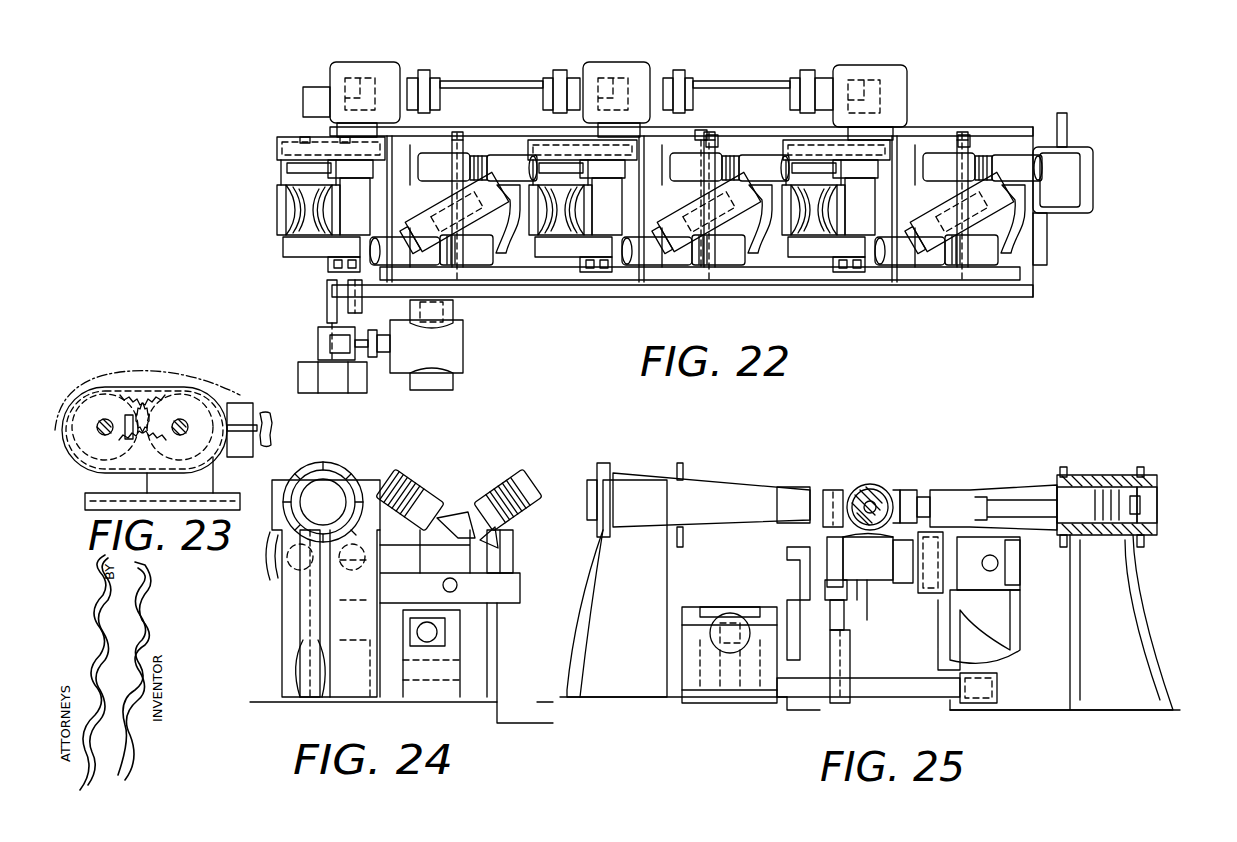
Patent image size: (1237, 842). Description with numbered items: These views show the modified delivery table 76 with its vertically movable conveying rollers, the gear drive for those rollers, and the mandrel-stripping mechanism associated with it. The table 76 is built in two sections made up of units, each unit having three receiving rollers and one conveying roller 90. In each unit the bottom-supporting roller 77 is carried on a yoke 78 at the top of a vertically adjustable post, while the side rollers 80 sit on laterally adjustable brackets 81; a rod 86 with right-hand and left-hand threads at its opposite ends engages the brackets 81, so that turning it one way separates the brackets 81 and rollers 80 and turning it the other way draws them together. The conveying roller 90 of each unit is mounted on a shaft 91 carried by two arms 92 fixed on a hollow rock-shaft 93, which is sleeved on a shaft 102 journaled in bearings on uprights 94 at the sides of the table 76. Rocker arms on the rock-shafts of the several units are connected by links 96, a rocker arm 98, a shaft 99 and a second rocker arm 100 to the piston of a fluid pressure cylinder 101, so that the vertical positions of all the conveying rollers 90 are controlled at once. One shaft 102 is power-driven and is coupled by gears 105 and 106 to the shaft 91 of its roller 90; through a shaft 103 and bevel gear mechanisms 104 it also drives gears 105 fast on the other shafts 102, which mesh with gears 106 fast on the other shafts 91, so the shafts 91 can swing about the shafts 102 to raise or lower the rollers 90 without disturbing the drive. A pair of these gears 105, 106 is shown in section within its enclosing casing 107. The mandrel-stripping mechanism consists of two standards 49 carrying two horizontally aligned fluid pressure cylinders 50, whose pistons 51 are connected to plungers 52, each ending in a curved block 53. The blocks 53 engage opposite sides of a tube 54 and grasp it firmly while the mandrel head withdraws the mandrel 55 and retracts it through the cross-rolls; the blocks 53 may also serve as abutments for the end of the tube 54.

In FIG. 25, the standard 49 is at (1078, 475).
In FIG. 25, the fluid pressure cylinder 50 is at (1100, 487).
In FIG. 25, the piston 51 is at (1150, 487).
In FIG. 25, the plunger 52 is at (1000, 503).
In FIG. 25, the curved block 53 is at (835, 490).
In FIG. 25, the tube 54 is at (866, 487).
In FIG. 25, the mandrel 55 is at (897, 488).
In FIG. 22, the delivery table 76 is at (1060, 275).
In FIG. 22, the bottom-supporting roller 77 is at (446, 212).
In FIG. 22, the yoke 78 is at (510, 240).
In FIG. 24, the yoke 78 is at (510, 560).
In FIG. 22, the side roller 80 is at (515, 160).
In FIG. 24, the side roller 80 is at (400, 490).
In FIG. 24, the laterally-adjustable bracket 81 is at (455, 515).
In FIG. 22, the rod 86 is at (710, 135).
In FIG. 24, the rod 86 is at (505, 590).
In FIG. 22, the conveying roller 90 is at (292, 208).
In FIG. 25, the conveying roller 90 is at (893, 570).
In FIG. 22, the shaft 91 is at (290, 178).
In FIG. 23, the shaft 91 is at (102, 420).
In FIG. 22, the arm 92 is at (335, 262).
In FIG. 22, the hollow rock-shaft 93 is at (362, 195).
In FIG. 25, the hollow rock-shaft 93 is at (865, 570).
In FIG. 22, the upright 94 is at (360, 285).
In FIG. 23, the upright 94 is at (205, 485).
In FIG. 25, the upright 94 is at (800, 585).
In FIG. 25, the link 96 is at (830, 660).
In FIG. 25, the rocker arm 98 is at (848, 655).
In FIG. 22, the shaft 99 is at (320, 318).
In FIG. 23, the shaft 99 is at (272, 440).
In FIG. 24, the shaft 99 is at (335, 690).
In FIG. 25, the shaft 99 is at (895, 685).
In FIG. 22, the second rocker arm 100 is at (310, 357).
In FIG. 24, the second rocker arm 100 is at (313, 665).
In FIG. 22, the fluid pressure cylinder 101 is at (458, 350).
In FIG. 24, the fluid pressure cylinder 101 is at (465, 640).
In FIG. 25, the fluid pressure cylinder 101 is at (726, 615).
In FIG. 22, the shaft 102 is at (330, 340).
In FIG. 23, the shaft 102 is at (185, 420).
In FIG. 22, the shaft 103 is at (503, 88).
In FIG. 25, the shaft 103 is at (1000, 600).
In FIG. 22, the bevel gear mechanism 104 is at (368, 92).
In FIG. 22, the gear 105 is at (340, 137).
In FIG. 23, the gear 105 is at (158, 398).
In FIG. 22, the gear 106 is at (300, 137).
In FIG. 23, the gear 106 is at (128, 398).
In FIG. 22, the enclosing casing 107 is at (278, 148).
In FIG. 23, the enclosing casing 107 is at (65, 455).
In FIG. 24, the enclosing casing 107 is at (280, 565).
In FIG. 25, the enclosing casing 107 is at (1062, 467).